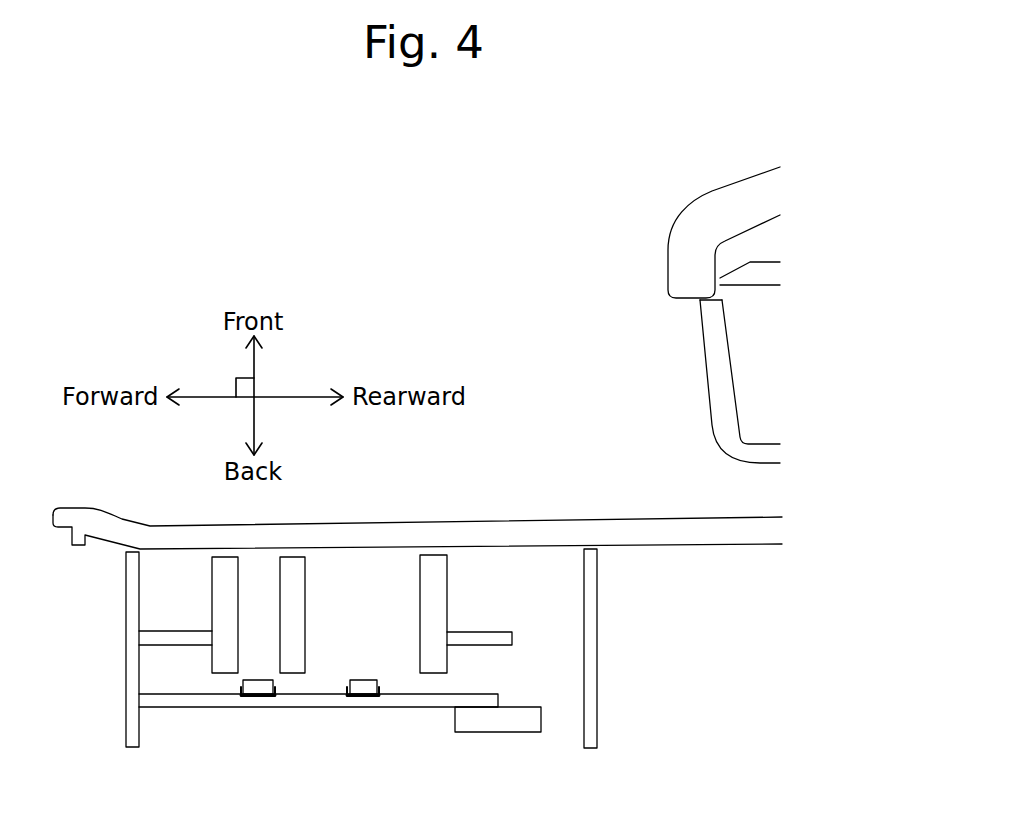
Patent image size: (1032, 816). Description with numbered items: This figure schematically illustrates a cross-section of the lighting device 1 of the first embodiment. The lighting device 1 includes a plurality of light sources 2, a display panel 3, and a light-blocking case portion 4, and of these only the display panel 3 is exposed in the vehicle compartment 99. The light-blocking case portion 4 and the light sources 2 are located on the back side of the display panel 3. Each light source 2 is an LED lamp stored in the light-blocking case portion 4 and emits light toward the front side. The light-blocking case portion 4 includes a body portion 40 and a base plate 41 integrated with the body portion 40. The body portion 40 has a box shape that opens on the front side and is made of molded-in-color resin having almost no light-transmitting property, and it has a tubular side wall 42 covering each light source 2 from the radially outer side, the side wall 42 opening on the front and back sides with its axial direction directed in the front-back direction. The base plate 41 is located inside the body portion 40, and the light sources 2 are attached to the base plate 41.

The lighting device 1 is at (470, 506).
The light source 2 is at (255, 702).
The display panel 3 is at (185, 532).
The light-blocking case portion 4 is at (116, 672).
The body portion 40 is at (130, 718).
The base plate 41 is at (417, 702).
The side wall 42 is at (222, 588).
The vehicle compartment 99 is at (546, 219).